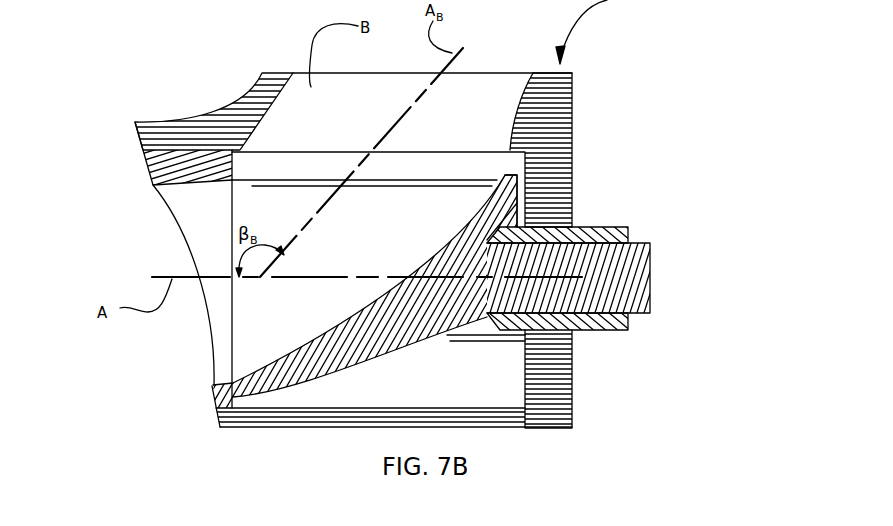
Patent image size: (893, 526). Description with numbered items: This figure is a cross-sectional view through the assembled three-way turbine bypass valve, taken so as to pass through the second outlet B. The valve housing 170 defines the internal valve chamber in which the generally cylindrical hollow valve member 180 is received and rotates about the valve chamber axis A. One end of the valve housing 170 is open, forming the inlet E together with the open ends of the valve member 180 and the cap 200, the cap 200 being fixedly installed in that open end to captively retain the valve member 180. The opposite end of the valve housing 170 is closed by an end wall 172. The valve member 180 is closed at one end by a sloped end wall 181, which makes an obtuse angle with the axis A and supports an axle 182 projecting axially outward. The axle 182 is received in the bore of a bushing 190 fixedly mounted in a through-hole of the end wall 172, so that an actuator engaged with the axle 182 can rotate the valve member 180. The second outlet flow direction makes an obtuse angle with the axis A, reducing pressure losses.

The valve housing 170 is at (233, 118).
The end wall 172 is at (553, 128).
The valve member 180 is at (385, 330).
The sloped end wall 181 is at (448, 238).
The axle 182 is at (638, 302).
The bushing 190 is at (587, 230).
The cap 200 is at (152, 181).